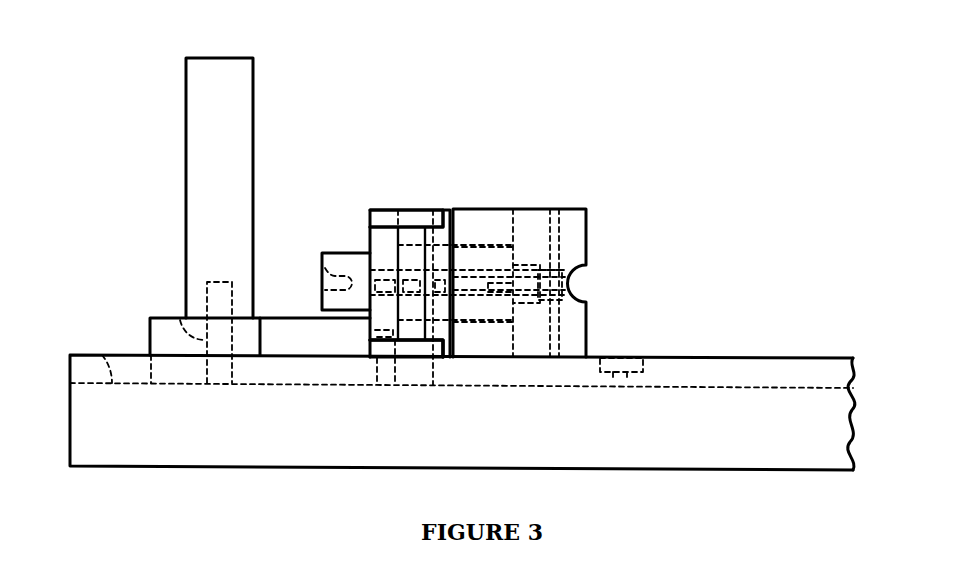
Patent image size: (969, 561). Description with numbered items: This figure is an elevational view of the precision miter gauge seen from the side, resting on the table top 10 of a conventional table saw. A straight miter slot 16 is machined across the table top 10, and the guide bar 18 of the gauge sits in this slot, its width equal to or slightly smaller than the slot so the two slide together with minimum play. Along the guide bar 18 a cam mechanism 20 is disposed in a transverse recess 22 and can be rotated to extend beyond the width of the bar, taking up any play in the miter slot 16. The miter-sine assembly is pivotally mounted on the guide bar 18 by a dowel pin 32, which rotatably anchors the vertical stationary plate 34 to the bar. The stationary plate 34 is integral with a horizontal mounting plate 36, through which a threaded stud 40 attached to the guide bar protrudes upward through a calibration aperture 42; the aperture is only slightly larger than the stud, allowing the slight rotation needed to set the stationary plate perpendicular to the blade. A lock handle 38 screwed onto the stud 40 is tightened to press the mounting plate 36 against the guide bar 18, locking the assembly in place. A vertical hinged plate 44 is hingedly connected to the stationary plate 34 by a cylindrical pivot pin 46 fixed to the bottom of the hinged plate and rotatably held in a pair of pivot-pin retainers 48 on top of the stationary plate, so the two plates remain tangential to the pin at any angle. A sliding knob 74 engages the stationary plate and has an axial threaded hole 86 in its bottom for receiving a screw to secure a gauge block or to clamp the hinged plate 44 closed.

The table top 10 is at (462, 412).
The miter slot 16 is at (102, 355).
The guide bar 18 is at (150, 362).
The cam mechanism 20 is at (613, 357).
The transverse recess 22 is at (628, 357).
The dowel pin 32 is at (373, 366).
The stationary plate 34 is at (368, 235).
The mounting plate 36 is at (149, 338).
The lock handle 38 is at (222, 58).
The threaded stud 40 is at (207, 365).
The calibration aperture 42 is at (180, 318).
The hinged plate 44 is at (570, 209).
The pivot pin 46 is at (412, 233).
The pivot-pin retainer 48 is at (417, 218).
The sliding knob 74 is at (335, 253).
The axial threaded hole 86 is at (322, 263).